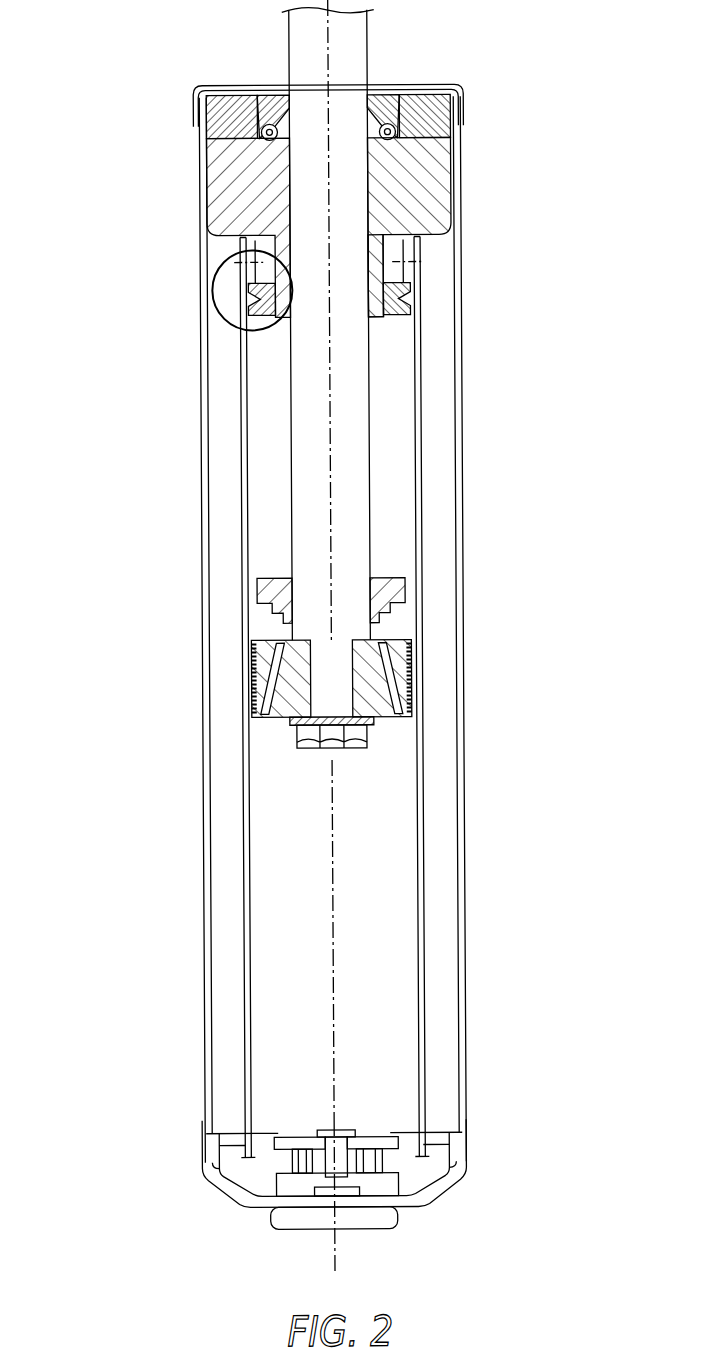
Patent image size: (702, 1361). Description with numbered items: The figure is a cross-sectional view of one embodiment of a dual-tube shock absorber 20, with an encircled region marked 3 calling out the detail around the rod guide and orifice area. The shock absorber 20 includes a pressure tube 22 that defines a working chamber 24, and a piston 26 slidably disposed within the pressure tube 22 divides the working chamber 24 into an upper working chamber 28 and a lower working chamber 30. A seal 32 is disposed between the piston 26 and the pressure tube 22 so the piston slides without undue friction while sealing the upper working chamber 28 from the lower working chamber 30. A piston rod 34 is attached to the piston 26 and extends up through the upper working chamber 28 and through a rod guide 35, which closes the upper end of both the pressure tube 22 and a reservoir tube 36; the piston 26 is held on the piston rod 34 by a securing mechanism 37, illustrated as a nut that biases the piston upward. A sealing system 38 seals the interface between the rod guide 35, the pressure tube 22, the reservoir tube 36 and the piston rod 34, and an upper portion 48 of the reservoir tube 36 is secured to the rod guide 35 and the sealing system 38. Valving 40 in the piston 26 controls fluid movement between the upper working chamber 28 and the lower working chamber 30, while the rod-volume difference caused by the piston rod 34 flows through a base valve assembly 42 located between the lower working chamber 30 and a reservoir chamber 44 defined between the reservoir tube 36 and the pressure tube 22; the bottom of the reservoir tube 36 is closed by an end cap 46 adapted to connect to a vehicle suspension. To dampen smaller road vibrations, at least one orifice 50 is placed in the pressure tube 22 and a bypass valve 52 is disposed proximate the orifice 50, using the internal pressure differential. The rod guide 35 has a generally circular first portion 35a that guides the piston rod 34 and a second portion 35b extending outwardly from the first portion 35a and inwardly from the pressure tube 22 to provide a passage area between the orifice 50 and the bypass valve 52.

The shock absorber 20 is at (126, 101).
The pressure tube 22 is at (240, 473).
The working chamber 24 is at (374, 929).
The piston 26 is at (412, 678).
The upper working chamber 28 is at (388, 497).
The lower working chamber 30 is at (282, 905).
The seal 32 is at (416, 663).
The piston rod 34 is at (352, 383).
The rod guide 35 is at (428, 185).
The first portion 35a is at (234, 190).
The second portion 35b is at (382, 252).
The reservoir tube 36 is at (200, 548).
The securing mechanism 37 is at (368, 713).
The sealing system 38 is at (246, 96).
The valving 40 is at (266, 643).
The base valve assembly 42 is at (280, 1136).
The reservoir chamber 44 is at (222, 344).
The end cap 46 is at (440, 1183).
The upper portion 48 is at (198, 106).
The orifice 50 is at (232, 265).
The bypass valve 52 is at (247, 297).
The detail circle of FIG. 3 is at (210, 290).